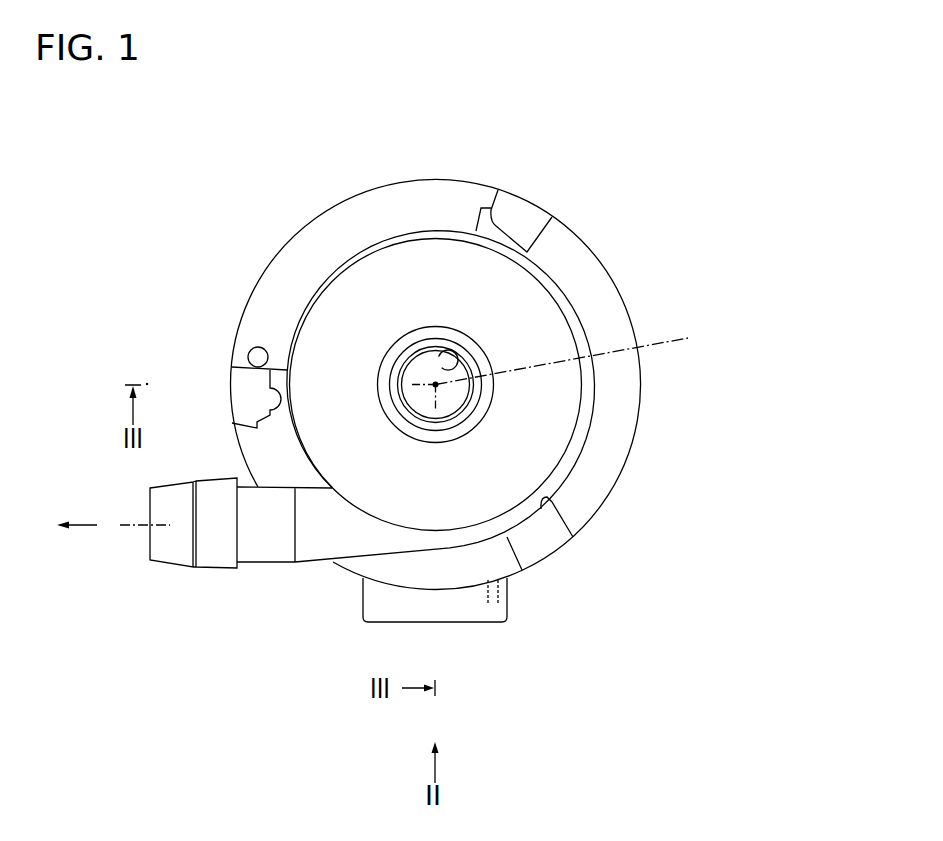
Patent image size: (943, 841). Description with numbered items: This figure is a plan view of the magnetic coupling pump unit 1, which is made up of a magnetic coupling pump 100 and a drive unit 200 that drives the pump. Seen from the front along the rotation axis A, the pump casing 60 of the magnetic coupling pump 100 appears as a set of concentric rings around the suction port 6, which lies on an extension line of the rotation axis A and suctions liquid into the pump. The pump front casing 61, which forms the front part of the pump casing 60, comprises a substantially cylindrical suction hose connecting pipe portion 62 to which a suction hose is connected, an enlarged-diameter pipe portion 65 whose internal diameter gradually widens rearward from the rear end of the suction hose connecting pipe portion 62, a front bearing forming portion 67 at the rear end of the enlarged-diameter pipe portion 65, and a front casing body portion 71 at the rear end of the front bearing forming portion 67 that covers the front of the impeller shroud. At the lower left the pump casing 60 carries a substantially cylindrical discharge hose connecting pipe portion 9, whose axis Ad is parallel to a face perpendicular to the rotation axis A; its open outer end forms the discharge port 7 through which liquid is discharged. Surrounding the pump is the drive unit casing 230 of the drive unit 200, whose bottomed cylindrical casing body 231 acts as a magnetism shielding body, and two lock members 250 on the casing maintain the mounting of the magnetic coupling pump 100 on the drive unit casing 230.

The magnetic coupling pump unit 1 is at (630, 274).
The suction port 6 is at (362, 278).
The discharge port 7 is at (150, 550).
The discharge hose connecting pipe portion 9 is at (170, 557).
The pump casing 60 is at (355, 133).
The pump front casing 61 is at (264, 108).
The suction hose connecting pipe portion 62 is at (436, 350).
The enlarged-diameter pipe portion 65 is at (413, 352).
The front bearing forming portion 67 is at (397, 355).
The front casing body portion 71 is at (330, 343).
The magnetic coupling pump 100 is at (540, 277).
The drive unit 200 is at (332, 563).
The drive unit casing 230 is at (635, 433).
The casing body 231 is at (506, 384).
The lock member 250 is at (245, 392).
The rotation axis A is at (572, 351).
The axis of discharge hose connecting pipe portion Ad is at (127, 526).